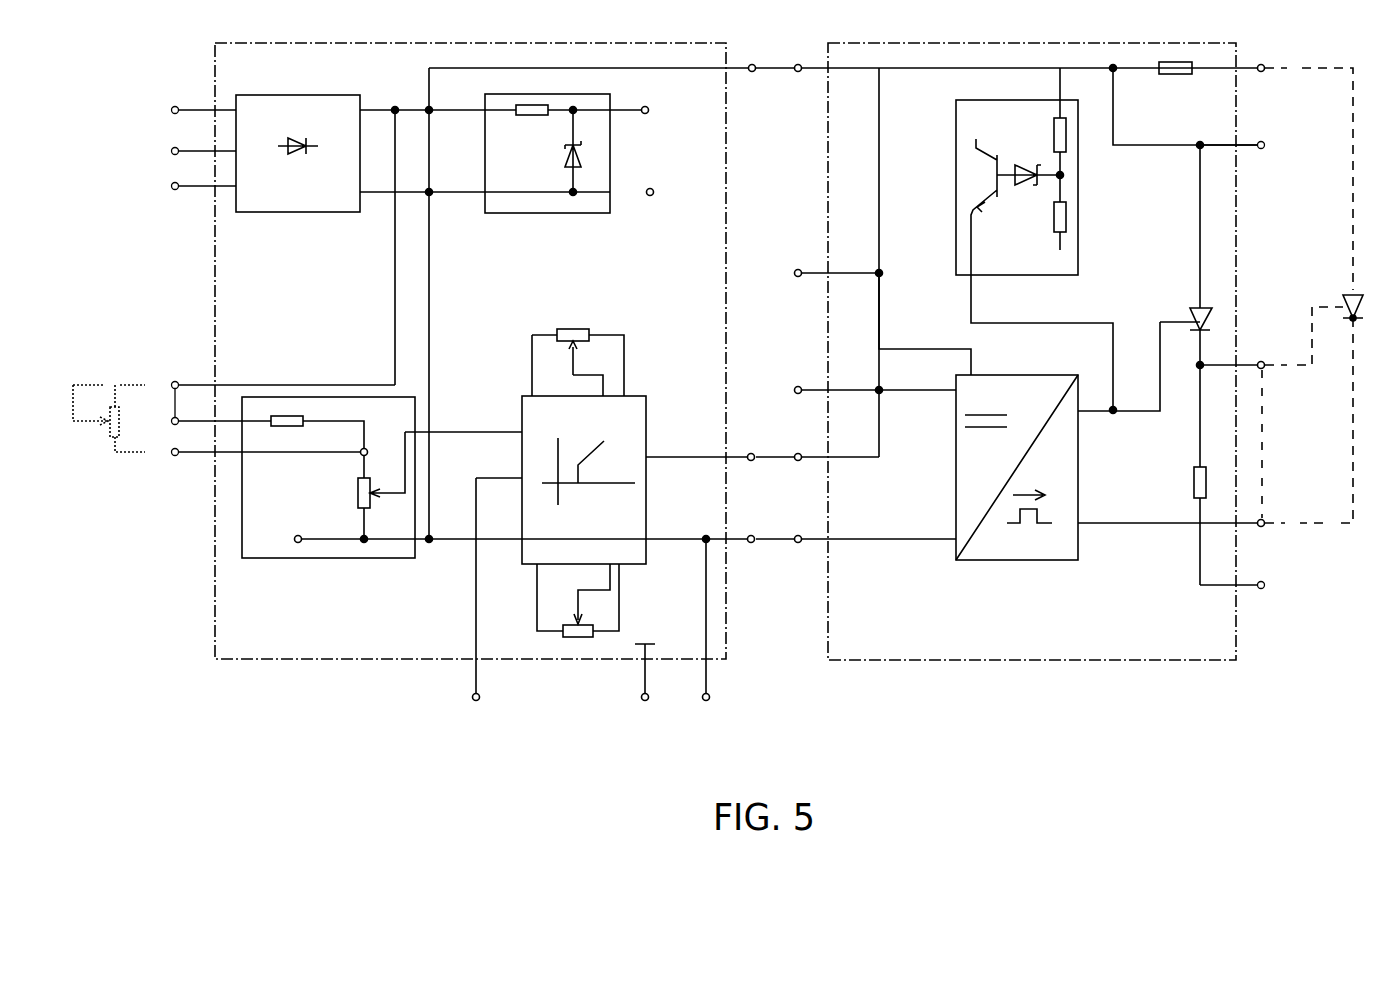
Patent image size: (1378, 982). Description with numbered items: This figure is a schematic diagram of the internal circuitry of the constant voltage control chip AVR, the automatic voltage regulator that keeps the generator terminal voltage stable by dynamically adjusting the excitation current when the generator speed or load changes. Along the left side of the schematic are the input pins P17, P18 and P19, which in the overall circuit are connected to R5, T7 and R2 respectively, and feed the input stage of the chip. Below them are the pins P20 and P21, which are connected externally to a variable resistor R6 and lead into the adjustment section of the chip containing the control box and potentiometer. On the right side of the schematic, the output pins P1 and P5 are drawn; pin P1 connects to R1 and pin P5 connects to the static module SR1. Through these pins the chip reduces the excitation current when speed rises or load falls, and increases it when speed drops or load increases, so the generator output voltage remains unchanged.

The pin P17 of AVR P17 is at (178, 111).
The pin P18 of AVR P18 is at (178, 152).
The pin P19 of AVR P19 is at (178, 187).
The pin P20 of AVR P20 is at (277, 390).
The pin P21 of AVR P21 is at (266, 469).
The pin P1 of AVR P1 is at (1248, 153).
The pin P5 of AVR P5 is at (1248, 593).